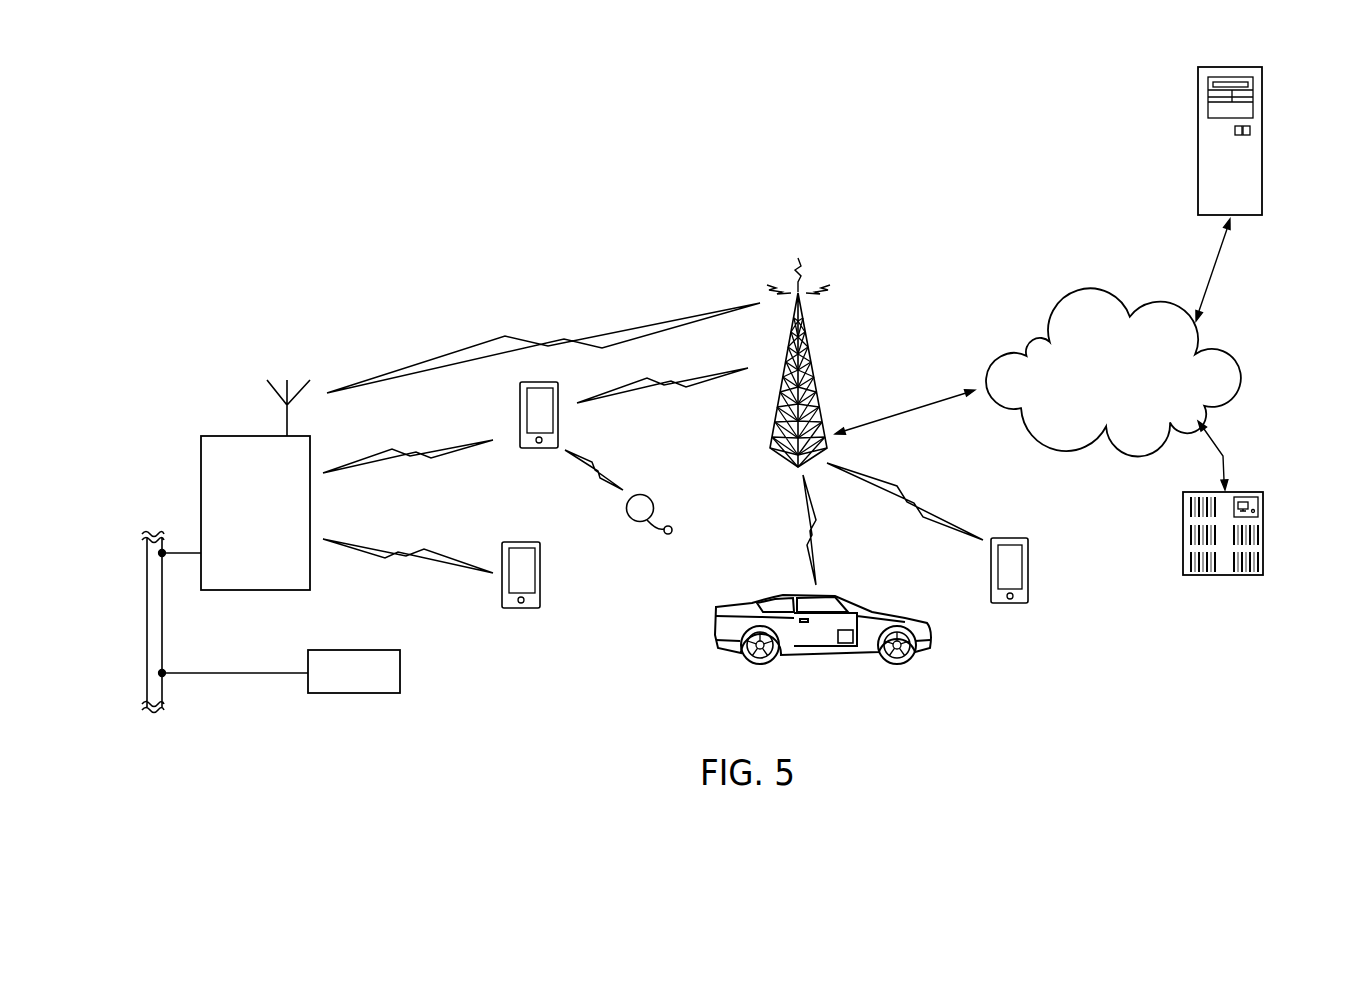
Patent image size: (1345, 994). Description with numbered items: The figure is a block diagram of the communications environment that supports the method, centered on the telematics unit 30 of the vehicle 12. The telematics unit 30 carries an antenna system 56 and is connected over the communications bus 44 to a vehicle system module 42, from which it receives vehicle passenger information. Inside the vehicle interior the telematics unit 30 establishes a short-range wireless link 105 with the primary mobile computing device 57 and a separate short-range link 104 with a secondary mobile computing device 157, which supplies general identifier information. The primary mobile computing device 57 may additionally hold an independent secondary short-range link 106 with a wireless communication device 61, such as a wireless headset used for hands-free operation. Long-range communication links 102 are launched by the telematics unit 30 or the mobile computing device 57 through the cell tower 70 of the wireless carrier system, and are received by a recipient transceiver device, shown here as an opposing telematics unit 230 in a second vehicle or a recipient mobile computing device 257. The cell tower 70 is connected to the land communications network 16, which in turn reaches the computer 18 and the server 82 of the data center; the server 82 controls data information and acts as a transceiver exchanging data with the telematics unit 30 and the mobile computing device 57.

The vehicle 12 is at (715, 635).
The land communications network 16 is at (1244, 378).
The computer 18 is at (1262, 155).
The telematics unit 30 is at (210, 436).
The vehicle system module 42 is at (400, 668).
The communications bus 44 is at (147, 607).
The antenna system 56 is at (272, 388).
The mobile computing device 57 is at (520, 410).
The wireless communication device 61 is at (634, 522).
The cell tower 70 is at (813, 357).
The server 82 is at (1265, 524).
The long-range communication link 102 is at (577, 323).
The SRWC link 104 is at (401, 569).
The SRWC communication link 105 is at (407, 469).
The secondary SRWC link 106 is at (583, 473).
The secondary mobile computing device 157 is at (502, 552).
The opposing telematics unit 230 is at (846, 644).
The recipient mobile computing device 257 is at (1028, 565).